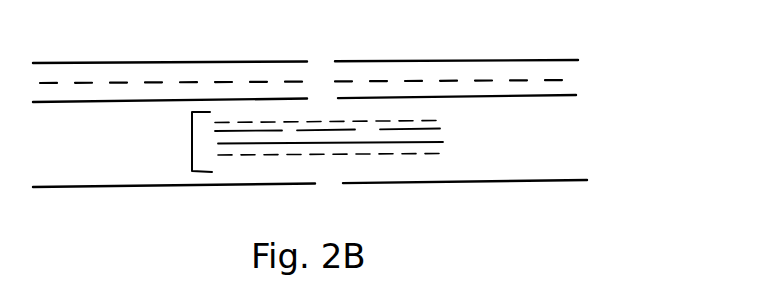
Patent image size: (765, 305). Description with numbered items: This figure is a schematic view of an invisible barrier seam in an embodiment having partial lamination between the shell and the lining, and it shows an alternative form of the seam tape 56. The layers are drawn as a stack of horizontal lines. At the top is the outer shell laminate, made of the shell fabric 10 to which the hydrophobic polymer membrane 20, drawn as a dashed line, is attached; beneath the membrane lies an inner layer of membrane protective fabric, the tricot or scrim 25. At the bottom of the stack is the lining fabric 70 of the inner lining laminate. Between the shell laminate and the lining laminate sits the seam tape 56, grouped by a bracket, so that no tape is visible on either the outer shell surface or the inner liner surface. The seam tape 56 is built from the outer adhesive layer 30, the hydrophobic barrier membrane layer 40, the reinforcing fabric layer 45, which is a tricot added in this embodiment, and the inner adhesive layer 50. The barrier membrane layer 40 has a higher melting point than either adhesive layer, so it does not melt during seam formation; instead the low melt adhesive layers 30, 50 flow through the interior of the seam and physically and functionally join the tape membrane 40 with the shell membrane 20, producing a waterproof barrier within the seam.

The shell fabric 10 is at (602, 59).
The hydrophobic polymer membrane 20 is at (604, 84).
The tricot or scrim 25 is at (596, 107).
The outer adhesive layer 30 is at (460, 118).
The hydrophobic barrier membrane layer 40 is at (463, 134).
The reinforcing fabric layer 45 is at (461, 149).
The inner adhesive layer 50 is at (449, 167).
The seam tape 56 is at (334, 136).
The lining fabric 70 is at (608, 184).